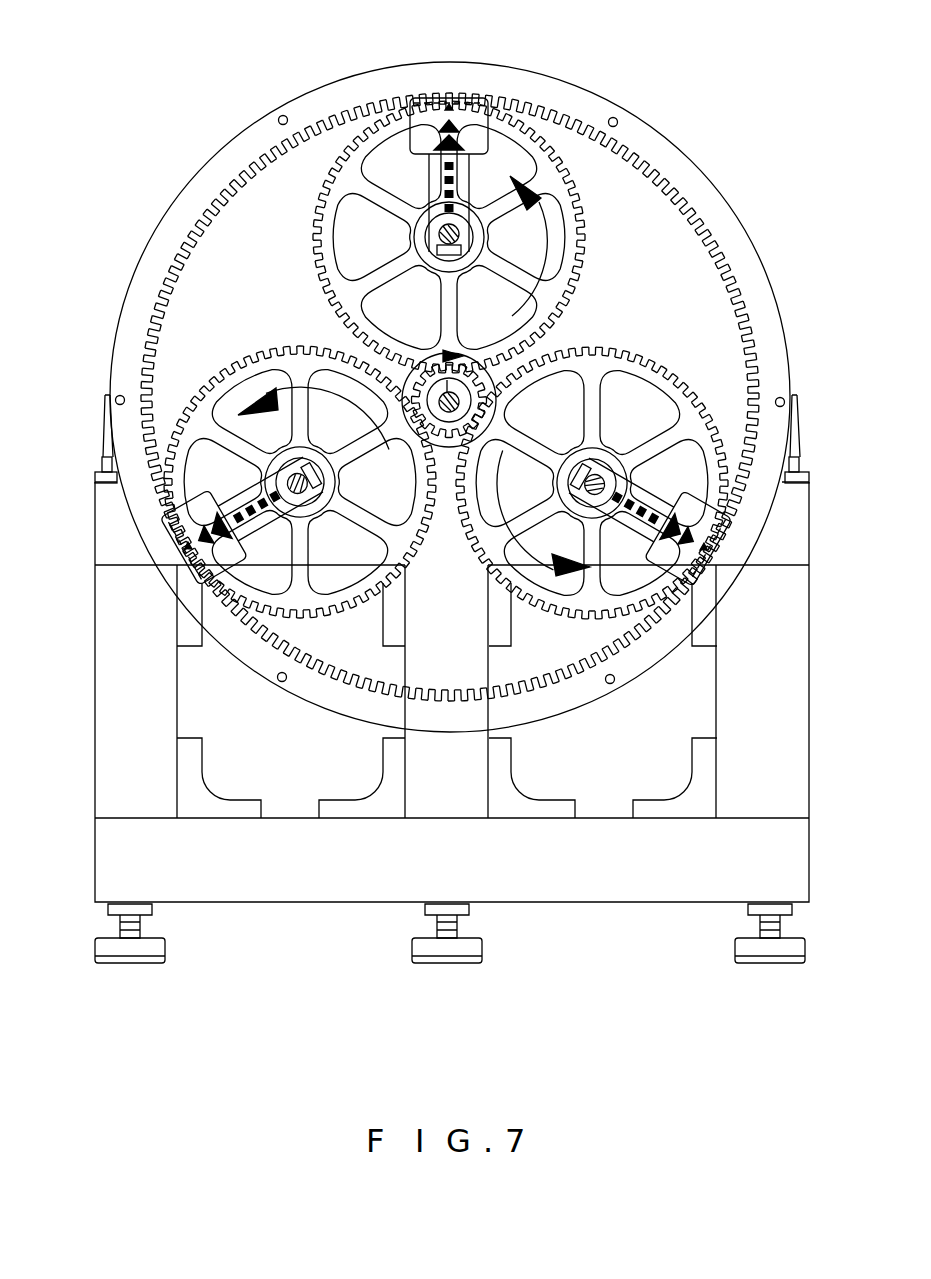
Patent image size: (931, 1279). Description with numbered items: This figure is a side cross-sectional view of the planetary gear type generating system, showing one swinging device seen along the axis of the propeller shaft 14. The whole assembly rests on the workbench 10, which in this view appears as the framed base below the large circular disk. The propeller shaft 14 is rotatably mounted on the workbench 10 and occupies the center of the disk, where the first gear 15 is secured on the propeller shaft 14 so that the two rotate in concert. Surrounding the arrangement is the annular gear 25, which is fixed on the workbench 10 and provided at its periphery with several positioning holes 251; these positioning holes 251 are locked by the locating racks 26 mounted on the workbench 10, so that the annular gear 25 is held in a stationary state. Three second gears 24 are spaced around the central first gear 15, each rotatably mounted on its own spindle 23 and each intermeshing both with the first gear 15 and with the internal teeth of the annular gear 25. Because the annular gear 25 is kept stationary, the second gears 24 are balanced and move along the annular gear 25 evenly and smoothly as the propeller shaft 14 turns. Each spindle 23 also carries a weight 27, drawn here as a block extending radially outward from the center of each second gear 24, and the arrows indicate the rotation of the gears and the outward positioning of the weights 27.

The workbench 10 is at (347, 879).
The propeller shaft 14 is at (493, 370).
The first gear 15 is at (407, 387).
The spindle 23 is at (437, 240).
The second gear 24 is at (347, 150).
The annular gear 25 is at (437, 78).
The positioning hole 251 is at (117, 396).
The locating rack 26 is at (105, 428).
The weight 27 is at (478, 120).